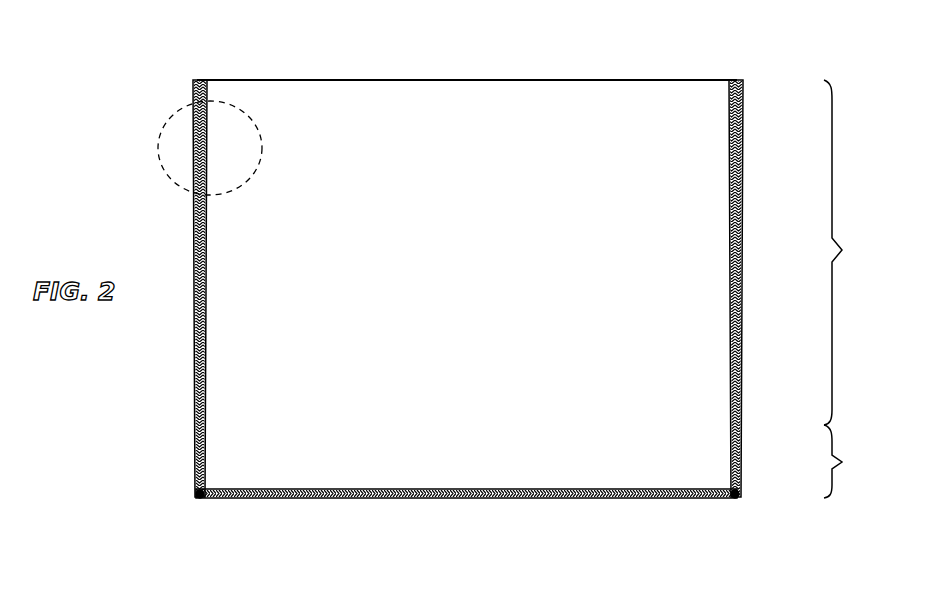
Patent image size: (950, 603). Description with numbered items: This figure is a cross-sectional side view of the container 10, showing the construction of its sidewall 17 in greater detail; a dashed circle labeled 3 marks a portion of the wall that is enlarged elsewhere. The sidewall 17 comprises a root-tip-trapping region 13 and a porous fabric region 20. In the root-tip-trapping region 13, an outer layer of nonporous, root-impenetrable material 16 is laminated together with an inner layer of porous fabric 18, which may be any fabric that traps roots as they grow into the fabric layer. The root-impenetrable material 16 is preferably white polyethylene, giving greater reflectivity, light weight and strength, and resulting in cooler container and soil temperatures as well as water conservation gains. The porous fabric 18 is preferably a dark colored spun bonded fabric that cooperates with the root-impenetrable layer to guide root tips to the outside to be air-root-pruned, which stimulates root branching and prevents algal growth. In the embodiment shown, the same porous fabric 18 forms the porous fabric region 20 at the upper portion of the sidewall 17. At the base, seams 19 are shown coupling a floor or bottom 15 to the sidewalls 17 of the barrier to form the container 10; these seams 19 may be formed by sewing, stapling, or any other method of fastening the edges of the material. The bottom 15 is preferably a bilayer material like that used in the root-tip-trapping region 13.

The container 10 is at (682, 40).
The root-tip-trapping region 13 is at (854, 252).
The bottom 15 is at (502, 490).
The root-impenetrable material 16 is at (195, 243).
The sidewall 17 is at (214, 166).
The porous fabric 18 is at (207, 284).
The seams 19 is at (196, 491).
The porous fabric region 20 is at (854, 461).
The detail view indicator 3 is at (208, 148).